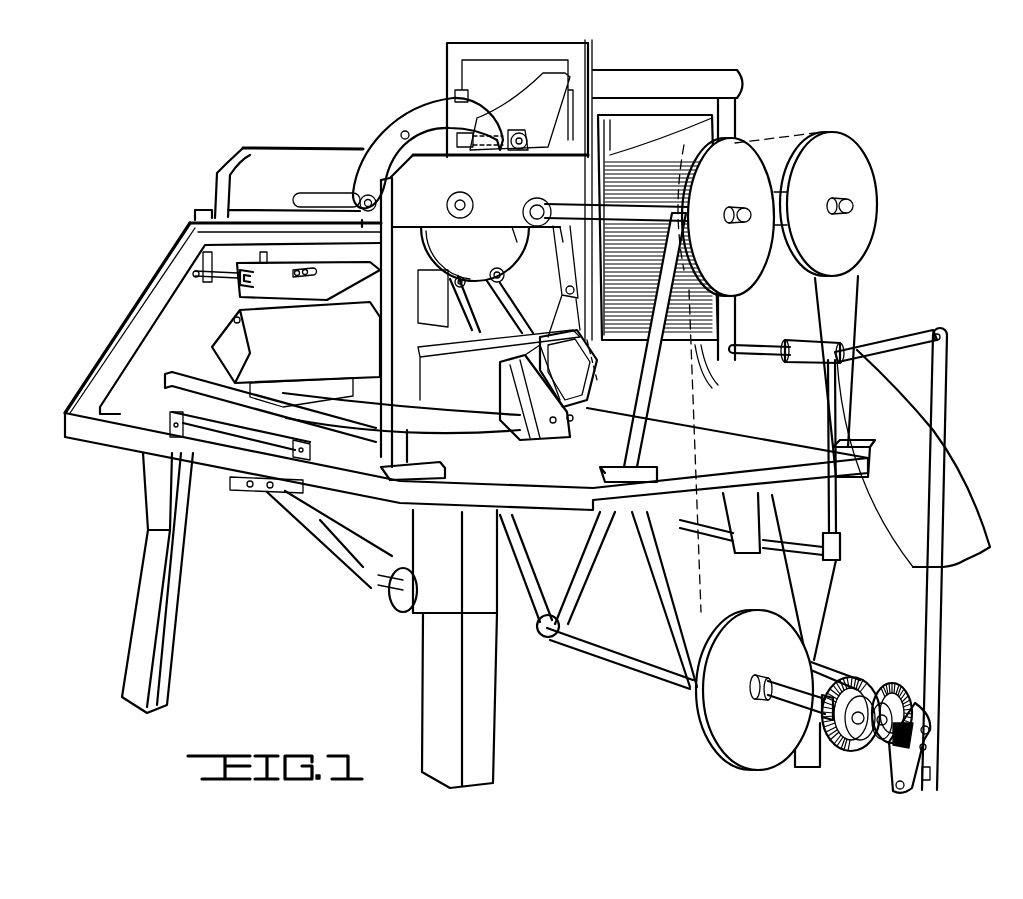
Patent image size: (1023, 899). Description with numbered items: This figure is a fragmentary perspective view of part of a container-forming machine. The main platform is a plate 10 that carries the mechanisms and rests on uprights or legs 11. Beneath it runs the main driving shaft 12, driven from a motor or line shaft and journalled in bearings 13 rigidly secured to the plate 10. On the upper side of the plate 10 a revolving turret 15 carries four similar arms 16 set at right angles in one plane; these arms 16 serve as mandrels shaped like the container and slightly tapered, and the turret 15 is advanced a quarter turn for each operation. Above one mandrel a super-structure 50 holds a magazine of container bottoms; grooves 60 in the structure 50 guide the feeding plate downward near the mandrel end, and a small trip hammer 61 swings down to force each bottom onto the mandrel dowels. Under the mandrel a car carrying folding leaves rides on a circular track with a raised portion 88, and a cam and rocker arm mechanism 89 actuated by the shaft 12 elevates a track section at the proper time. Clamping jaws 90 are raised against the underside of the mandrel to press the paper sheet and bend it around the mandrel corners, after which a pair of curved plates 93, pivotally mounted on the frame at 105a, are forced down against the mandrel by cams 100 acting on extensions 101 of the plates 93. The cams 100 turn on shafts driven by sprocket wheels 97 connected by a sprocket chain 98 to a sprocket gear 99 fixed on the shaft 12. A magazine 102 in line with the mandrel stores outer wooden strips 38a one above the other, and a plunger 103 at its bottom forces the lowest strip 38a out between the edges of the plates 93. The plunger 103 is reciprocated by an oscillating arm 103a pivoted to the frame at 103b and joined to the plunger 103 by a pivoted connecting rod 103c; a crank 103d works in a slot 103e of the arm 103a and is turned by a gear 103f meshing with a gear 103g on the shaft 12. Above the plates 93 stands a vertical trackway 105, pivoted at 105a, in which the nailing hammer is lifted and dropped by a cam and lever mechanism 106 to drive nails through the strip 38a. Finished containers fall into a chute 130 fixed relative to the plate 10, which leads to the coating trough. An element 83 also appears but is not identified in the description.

The plate 10 is at (466, 366).
The uprights or legs 11 is at (172, 618).
The main driving shaft 12 is at (617, 650).
The bearings 13 is at (378, 596).
The revolving turret 15 is at (445, 450).
The arms 16 is at (296, 354).
The outer wooden strip 38a is at (598, 383).
The super-structure 50 is at (291, 276).
The grooves 60 is at (240, 278).
The trip hammer 61 is at (203, 262).
The guide bar 83 is at (187, 373).
The raised portion of track 88 is at (401, 416).
The cam and rocker arm mechanism 89 is at (300, 515).
The clamping jaws 90 is at (570, 433).
The curved plates 93 is at (491, 310).
The sprocket wheels 97 is at (812, 153).
The sprocket chain 98 is at (860, 321).
The sprocket gear 99 is at (742, 768).
The cams 100 is at (475, 254).
The extensions 101 is at (500, 297).
The magazine 102 is at (687, 107).
The plunger 103 is at (770, 348).
The oscillating arm 103a is at (933, 583).
The pivot 103b is at (913, 780).
The connecting rod 103c is at (897, 337).
The crank 103d is at (917, 733).
The slot 103e is at (927, 700).
The gear 103f is at (887, 697).
The gear 103g is at (830, 748).
The vertical trackway 105 is at (580, 60).
The pivot 105a is at (554, 281).
The cam and lever mechanism 106 is at (412, 118).
The chute 130 is at (903, 413).